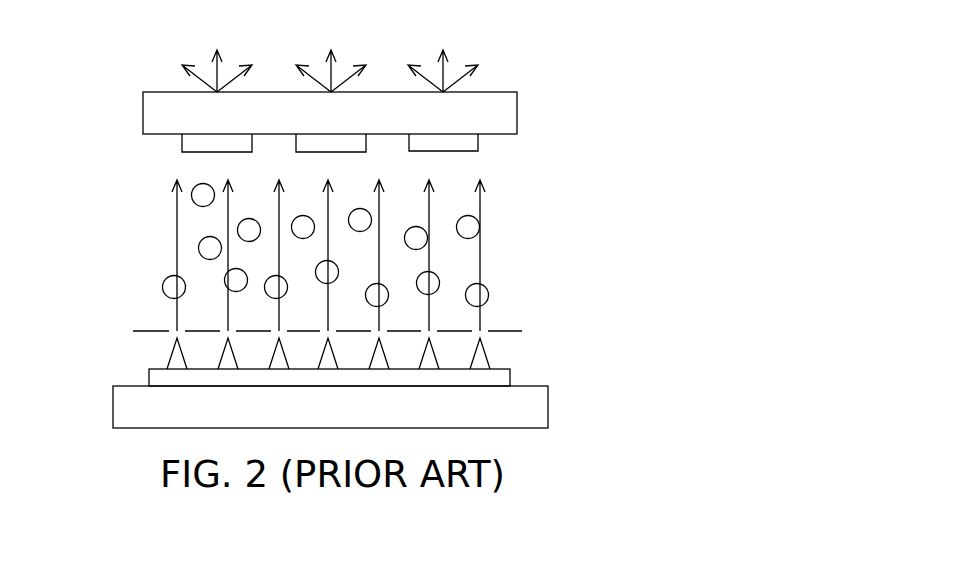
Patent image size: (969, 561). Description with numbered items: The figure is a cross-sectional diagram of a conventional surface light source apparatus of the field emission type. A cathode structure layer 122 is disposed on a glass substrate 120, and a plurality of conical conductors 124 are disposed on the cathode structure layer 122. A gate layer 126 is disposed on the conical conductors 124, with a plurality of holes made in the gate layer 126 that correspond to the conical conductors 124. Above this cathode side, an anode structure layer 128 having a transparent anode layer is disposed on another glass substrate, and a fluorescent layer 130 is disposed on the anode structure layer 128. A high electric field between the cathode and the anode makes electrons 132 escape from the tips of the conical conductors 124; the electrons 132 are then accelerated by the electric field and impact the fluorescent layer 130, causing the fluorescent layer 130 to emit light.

The glass substrate 120 is at (548, 406).
The cathode structure layer 122 is at (512, 377).
The conical conductors 124 is at (488, 352).
The gate layer 126 is at (503, 330).
The anode structure layer 128 is at (505, 108).
The fluorescent layer 130 is at (467, 152).
The electrons 132 is at (191, 193).